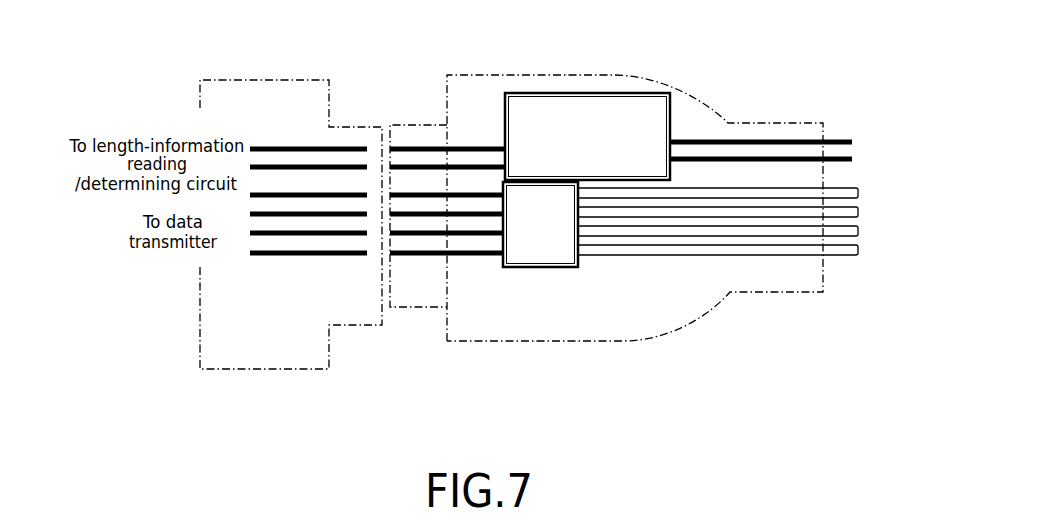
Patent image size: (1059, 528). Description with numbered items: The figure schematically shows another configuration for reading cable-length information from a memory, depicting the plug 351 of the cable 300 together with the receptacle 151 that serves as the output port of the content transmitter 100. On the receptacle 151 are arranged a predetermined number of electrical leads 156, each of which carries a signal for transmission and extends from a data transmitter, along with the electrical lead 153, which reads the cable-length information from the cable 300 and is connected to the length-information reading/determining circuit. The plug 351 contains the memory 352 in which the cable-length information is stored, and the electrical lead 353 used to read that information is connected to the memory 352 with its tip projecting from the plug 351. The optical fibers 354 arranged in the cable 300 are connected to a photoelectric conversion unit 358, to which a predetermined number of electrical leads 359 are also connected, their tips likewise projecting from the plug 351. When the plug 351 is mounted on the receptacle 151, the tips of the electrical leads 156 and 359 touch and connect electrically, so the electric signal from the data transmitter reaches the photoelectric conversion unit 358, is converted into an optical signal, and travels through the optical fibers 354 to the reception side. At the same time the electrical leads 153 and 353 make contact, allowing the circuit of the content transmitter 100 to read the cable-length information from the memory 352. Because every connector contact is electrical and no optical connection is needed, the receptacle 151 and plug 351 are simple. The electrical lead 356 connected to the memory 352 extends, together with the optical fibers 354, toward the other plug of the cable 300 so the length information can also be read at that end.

The content transmitter 100 is at (269, 228).
The receptacle 151 is at (282, 370).
The electrical lead 153 is at (293, 147).
The electrical leads 156 is at (337, 255).
The cable 300 is at (624, 210).
The plug 351 is at (580, 341).
The memory 352 is at (603, 93).
The electrical lead 353 is at (480, 148).
The optical fibers 354 is at (697, 253).
The electrical lead 356 is at (795, 142).
The photoelectric conversion unit 358 is at (540, 268).
The electrical leads 359 is at (467, 256).